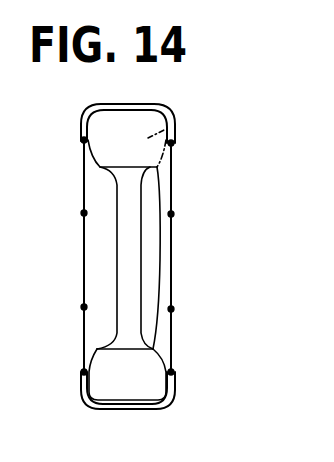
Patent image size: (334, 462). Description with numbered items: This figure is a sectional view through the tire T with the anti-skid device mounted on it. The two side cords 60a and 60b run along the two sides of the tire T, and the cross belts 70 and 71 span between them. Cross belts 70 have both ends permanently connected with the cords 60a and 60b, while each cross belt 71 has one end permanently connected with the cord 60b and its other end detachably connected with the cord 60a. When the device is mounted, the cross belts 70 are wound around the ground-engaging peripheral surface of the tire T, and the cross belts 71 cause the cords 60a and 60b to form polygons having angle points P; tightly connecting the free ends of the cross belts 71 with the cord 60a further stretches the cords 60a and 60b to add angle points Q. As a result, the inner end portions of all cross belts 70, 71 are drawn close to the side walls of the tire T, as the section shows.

The cross belt 71 is at (163, 84).
The cross belt 70 is at (151, 410).
The side cord 60a is at (171, 258).
The side cord 60b is at (84, 262).
The tire T is at (175, 128).
The angle point Q is at (127, 226).
The angle point P is at (126, 293).